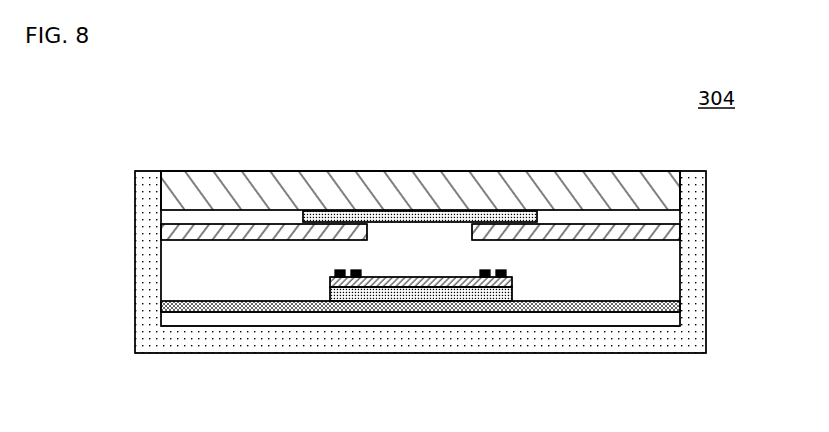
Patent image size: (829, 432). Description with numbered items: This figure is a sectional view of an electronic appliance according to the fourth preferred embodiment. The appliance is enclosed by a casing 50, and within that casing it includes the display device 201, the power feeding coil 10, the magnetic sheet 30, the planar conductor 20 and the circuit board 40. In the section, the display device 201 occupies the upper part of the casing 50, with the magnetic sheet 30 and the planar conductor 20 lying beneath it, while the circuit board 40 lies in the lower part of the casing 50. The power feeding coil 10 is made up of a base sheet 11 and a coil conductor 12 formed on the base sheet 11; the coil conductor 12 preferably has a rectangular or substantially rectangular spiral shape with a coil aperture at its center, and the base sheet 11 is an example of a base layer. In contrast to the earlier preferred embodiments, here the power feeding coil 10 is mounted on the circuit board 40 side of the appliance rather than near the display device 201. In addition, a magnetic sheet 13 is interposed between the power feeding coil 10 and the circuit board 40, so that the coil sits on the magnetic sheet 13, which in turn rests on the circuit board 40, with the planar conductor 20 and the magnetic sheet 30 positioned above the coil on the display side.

The power feeding coil 10 is at (426, 315).
The base sheet 11 is at (420, 284).
The coil conductor 12 is at (356, 269).
The magnetic sheet 13 is at (440, 300).
The planar conductor 20 is at (608, 232).
The magnetic sheet 30 is at (422, 214).
The circuit board 40 is at (603, 312).
The casing 50 is at (695, 258).
The display device 201 is at (340, 180).